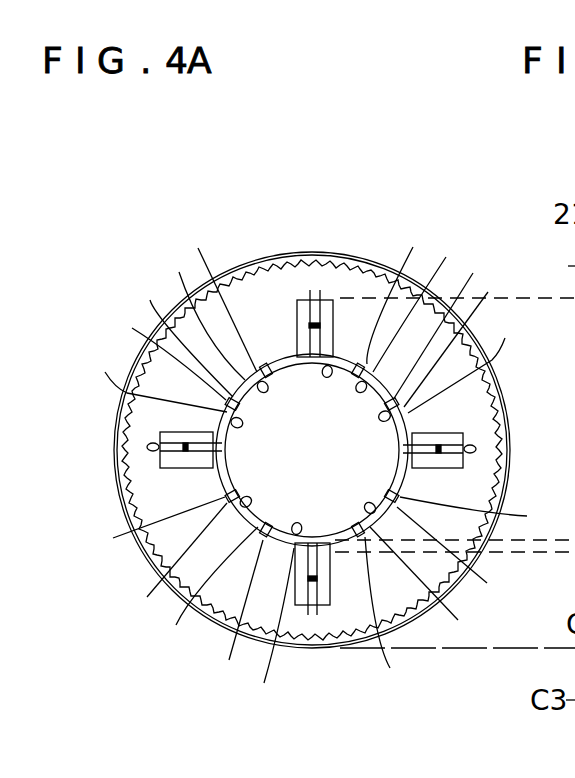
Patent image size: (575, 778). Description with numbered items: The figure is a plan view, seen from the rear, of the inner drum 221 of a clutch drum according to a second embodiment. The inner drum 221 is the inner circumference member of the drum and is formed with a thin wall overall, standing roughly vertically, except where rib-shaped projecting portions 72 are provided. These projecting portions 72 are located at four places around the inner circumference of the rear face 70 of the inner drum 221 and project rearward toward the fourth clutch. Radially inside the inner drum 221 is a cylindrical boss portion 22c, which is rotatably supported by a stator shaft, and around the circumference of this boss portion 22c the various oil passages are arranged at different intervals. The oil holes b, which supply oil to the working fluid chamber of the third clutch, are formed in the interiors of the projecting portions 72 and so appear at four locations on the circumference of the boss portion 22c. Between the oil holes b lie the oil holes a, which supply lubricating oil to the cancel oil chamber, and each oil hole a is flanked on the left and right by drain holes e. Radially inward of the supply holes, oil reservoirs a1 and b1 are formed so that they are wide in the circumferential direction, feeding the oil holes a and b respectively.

The inner drum 221 is at (178, 212).
The rear face 70 is at (265, 362).
The projecting portions 72 is at (298, 299).
The boss portion 22c is at (405, 476).
The oil holes b is at (314, 290).
The oil reservoirs b1 is at (334, 365).
The drain holes e is at (318, 455).
The oil reservoirs a1 is at (317, 419).
The oil holes a is at (310, 455).